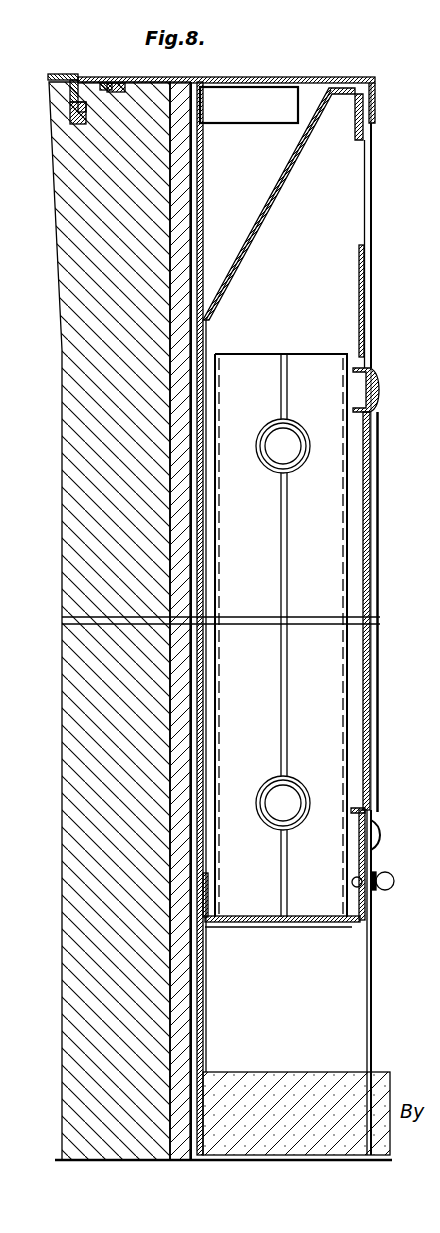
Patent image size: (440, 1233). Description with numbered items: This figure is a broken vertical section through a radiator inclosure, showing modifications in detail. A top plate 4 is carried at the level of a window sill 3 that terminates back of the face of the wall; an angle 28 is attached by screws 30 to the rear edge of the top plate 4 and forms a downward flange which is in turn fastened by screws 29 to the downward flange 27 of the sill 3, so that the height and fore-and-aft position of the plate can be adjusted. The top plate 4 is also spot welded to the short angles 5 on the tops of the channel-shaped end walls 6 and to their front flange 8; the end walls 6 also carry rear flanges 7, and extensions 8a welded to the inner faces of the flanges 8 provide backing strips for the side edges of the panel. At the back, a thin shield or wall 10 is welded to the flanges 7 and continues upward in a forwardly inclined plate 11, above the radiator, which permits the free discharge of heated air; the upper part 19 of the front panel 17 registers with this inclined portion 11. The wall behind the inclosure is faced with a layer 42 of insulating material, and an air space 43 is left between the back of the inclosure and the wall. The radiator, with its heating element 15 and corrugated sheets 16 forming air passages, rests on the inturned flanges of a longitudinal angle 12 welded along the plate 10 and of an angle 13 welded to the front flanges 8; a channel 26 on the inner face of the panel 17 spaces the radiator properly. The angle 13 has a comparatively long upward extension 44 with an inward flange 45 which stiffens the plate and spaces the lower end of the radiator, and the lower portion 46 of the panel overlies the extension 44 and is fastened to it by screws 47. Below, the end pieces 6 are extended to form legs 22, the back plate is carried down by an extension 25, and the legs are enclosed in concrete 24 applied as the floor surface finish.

The window sill 3 is at (58, 75).
The top plate 4 is at (280, 78).
The short angles 5 is at (249, 105).
The end walls 6 is at (283, 204).
The rear flanges 7 is at (204, 232).
The front flanges 8 is at (376, 96).
The extensions 8a is at (359, 282).
The shield or back wall 10 is at (219, 582).
The forwardly inclined plate 11 is at (247, 245).
The longitudinal angle 12 is at (232, 923).
The angle 13 is at (352, 926).
The heating element 15 is at (274, 790).
The corrugated sheets 16 is at (281, 770).
The front panel 17 is at (371, 532).
The upper part of panel 19 is at (372, 180).
The legs 22 is at (286, 999).
The concrete 24 is at (314, 1072).
The extension 25 is at (206, 1000).
The channel 26 is at (353, 374).
The downward flange 27 is at (70, 114).
The angle 28 is at (85, 120).
The screws 29 is at (102, 83).
The screws 30 is at (118, 88).
The insulating layer 42 is at (185, 206).
The air space 43 is at (194, 178).
The upward extension 44 is at (359, 852).
The inward flange 45 is at (352, 808).
The lower portion of panel 46 is at (380, 865).
The screws 47 is at (392, 887).